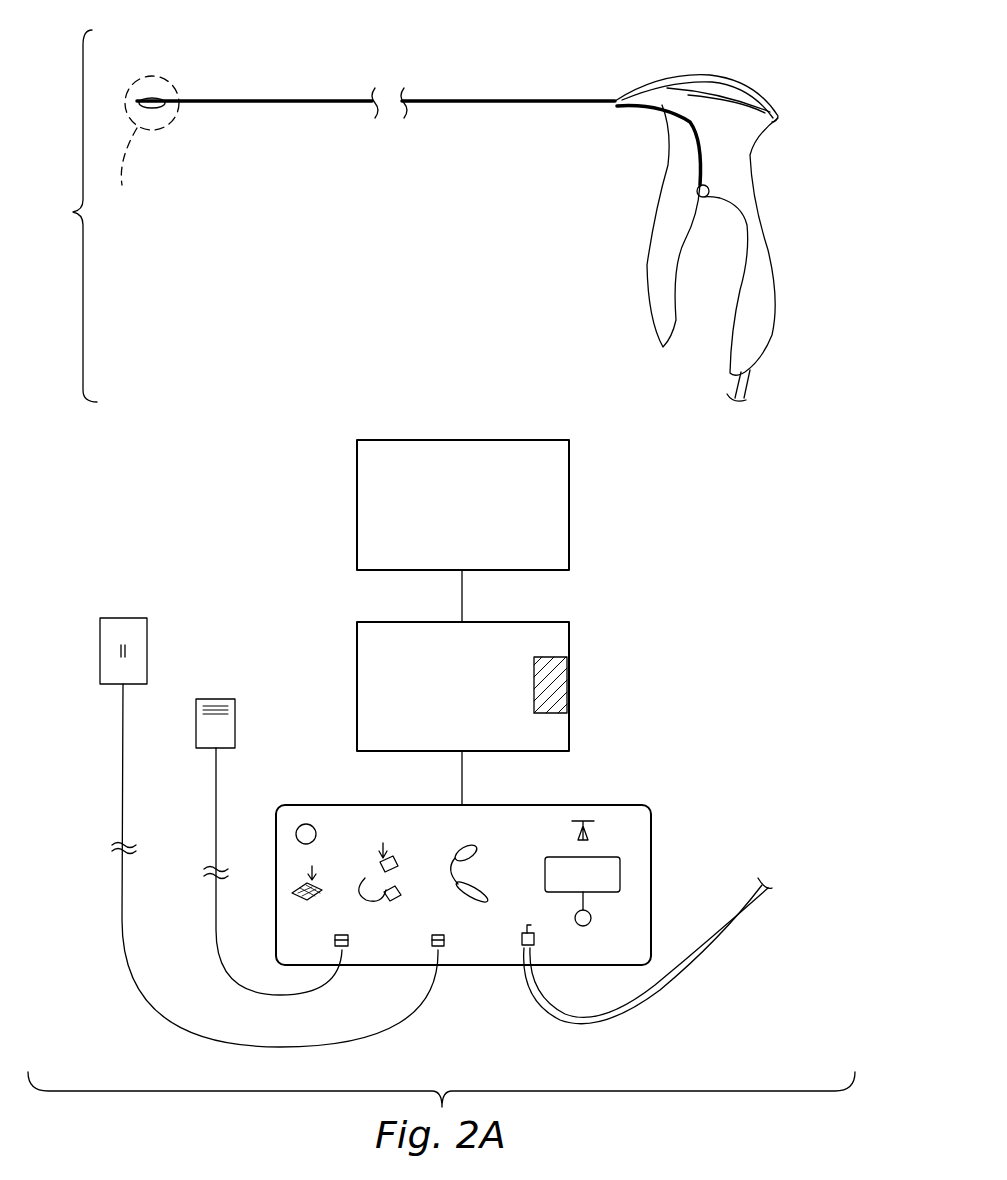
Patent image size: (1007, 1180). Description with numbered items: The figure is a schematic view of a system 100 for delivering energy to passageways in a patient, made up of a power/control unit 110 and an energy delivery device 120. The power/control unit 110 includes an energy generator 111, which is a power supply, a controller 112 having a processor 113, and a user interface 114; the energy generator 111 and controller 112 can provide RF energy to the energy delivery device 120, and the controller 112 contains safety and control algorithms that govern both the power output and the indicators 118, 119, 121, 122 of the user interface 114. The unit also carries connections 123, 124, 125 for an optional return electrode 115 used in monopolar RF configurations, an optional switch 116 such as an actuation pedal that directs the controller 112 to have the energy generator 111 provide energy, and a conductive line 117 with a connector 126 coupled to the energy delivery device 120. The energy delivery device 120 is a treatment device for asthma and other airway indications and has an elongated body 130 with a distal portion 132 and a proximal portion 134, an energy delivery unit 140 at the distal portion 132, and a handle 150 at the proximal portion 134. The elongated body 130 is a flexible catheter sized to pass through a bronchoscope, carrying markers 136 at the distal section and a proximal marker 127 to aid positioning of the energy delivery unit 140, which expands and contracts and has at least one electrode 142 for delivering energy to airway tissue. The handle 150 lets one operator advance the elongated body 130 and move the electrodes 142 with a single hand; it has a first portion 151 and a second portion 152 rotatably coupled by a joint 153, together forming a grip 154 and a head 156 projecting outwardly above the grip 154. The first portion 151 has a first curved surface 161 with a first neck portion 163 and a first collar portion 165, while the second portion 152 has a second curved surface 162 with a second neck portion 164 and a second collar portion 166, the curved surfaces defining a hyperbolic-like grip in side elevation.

The system 100 is at (660, 500).
The power/control unit 110 is at (216, 493).
The energy generator 111 is at (380, 438).
The controller 112 is at (481, 670).
The processor 113 is at (568, 685).
The user interface 114 is at (467, 885).
The return electrode 115 is at (135, 617).
The switch 116 is at (225, 697).
The conductive line 117 is at (752, 393).
The indicator 118 is at (620, 875).
The indicator 119 is at (458, 882).
The energy delivery device 120 is at (73, 212).
The indicator 121 is at (365, 876).
The indicator 122 is at (293, 884).
The connection 123 is at (428, 936).
The connection 124 is at (333, 942).
The connection 125 is at (522, 928).
The connector 126 is at (535, 948).
The proximal marker 127 is at (540, 100).
The elongated body 130 is at (353, 90).
The distal portion 132 is at (203, 106).
The proximal portion 134 is at (490, 104).
The markers 136 is at (188, 101).
The energy delivery unit 140 is at (167, 130).
The electrode 142 is at (158, 99).
The handle 150 is at (729, 191).
The first portion 151 is at (778, 246).
The second portion 152 is at (652, 234).
The joint 153 is at (706, 197).
The grip 154 is at (607, 128).
The head 156 is at (693, 78).
The first curved surface 161 is at (770, 215).
The second curved surface 162 is at (648, 266).
The first neck portion 163 is at (752, 148).
The second neck portion 164 is at (668, 162).
The first collar portion 165 is at (708, 108).
The second collar portion 166 is at (640, 113).